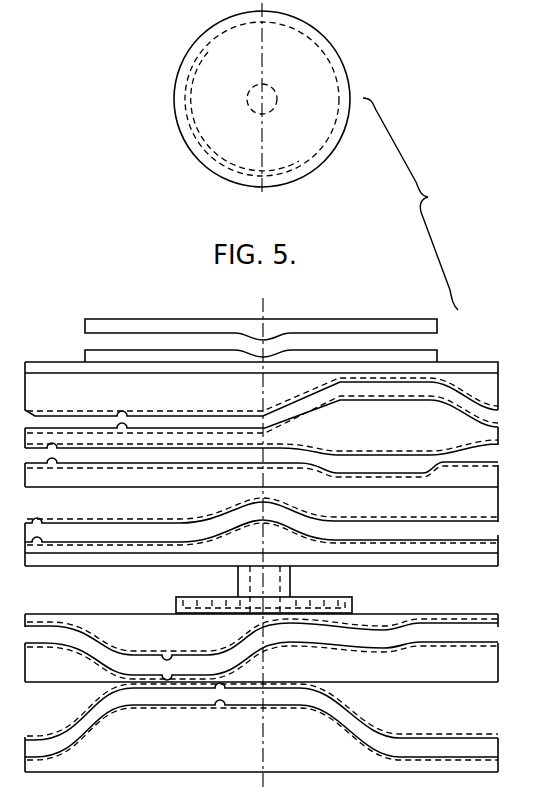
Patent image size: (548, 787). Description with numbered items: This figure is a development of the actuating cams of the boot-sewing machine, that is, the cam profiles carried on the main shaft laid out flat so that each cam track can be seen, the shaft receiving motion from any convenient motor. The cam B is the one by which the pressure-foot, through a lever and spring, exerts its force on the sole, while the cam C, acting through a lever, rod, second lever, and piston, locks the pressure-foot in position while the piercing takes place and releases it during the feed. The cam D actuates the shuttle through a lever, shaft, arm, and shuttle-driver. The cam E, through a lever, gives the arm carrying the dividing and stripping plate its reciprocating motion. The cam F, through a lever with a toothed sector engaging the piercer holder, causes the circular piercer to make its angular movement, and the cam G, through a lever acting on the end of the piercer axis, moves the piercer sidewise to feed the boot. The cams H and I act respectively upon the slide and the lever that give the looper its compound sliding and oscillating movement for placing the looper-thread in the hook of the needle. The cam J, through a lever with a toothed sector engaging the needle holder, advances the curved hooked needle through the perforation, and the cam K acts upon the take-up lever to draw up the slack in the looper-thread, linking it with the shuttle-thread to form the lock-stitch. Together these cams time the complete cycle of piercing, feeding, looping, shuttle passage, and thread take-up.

The cam B is at (261, 336).
The cam C is at (296, 41).
The cam D is at (261, 424).
The cam E is at (261, 482).
The cam F is at (261, 532).
The cam G is at (290, 176).
The cam H is at (238, 597).
The cam I is at (195, 597).
The cam J is at (261, 648).
The cam K is at (261, 727).